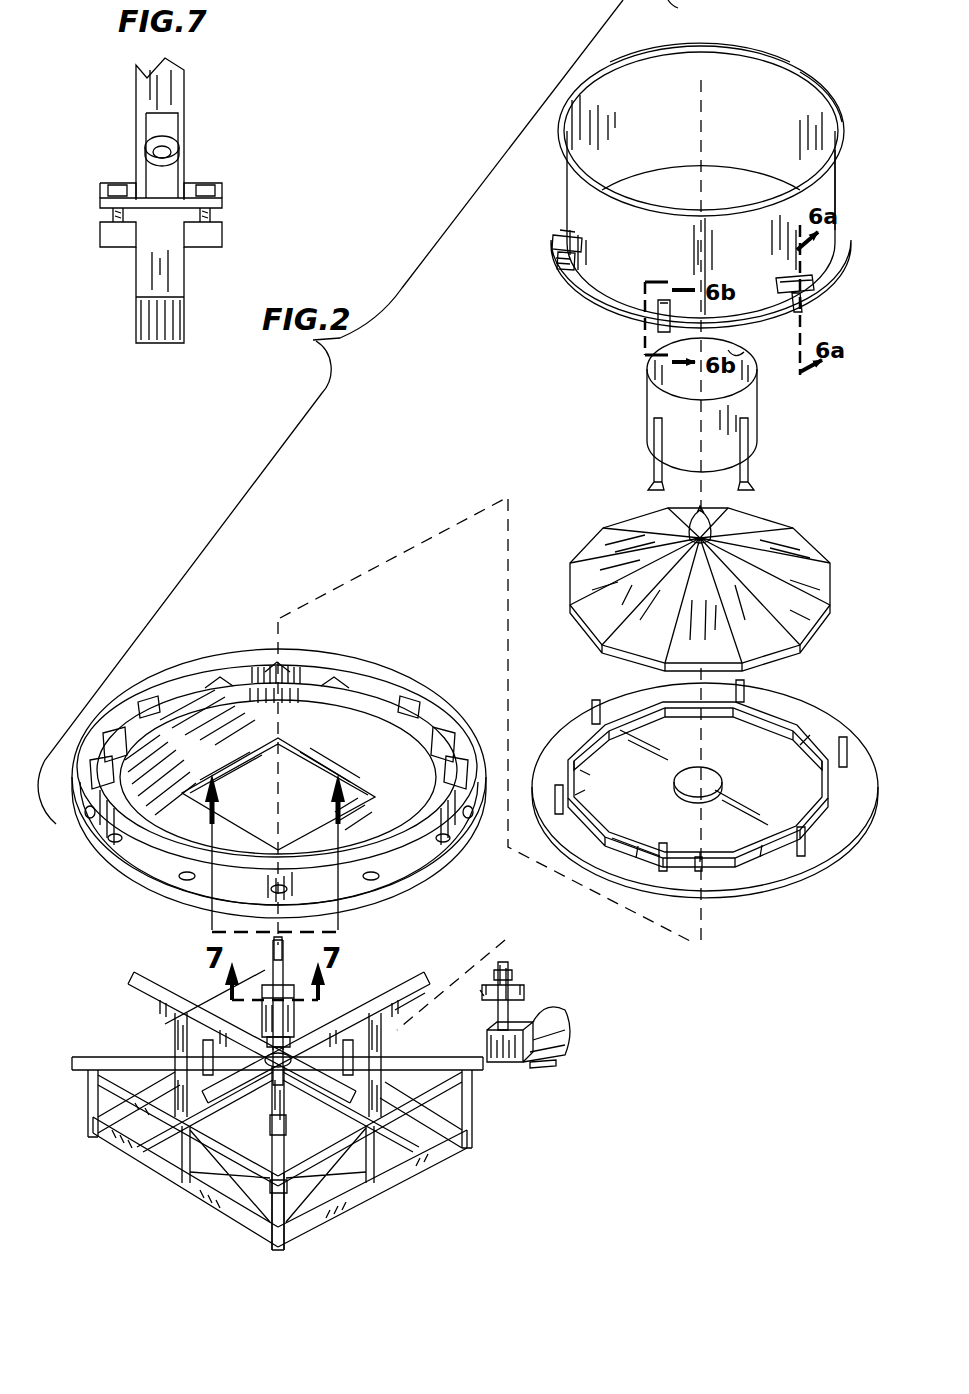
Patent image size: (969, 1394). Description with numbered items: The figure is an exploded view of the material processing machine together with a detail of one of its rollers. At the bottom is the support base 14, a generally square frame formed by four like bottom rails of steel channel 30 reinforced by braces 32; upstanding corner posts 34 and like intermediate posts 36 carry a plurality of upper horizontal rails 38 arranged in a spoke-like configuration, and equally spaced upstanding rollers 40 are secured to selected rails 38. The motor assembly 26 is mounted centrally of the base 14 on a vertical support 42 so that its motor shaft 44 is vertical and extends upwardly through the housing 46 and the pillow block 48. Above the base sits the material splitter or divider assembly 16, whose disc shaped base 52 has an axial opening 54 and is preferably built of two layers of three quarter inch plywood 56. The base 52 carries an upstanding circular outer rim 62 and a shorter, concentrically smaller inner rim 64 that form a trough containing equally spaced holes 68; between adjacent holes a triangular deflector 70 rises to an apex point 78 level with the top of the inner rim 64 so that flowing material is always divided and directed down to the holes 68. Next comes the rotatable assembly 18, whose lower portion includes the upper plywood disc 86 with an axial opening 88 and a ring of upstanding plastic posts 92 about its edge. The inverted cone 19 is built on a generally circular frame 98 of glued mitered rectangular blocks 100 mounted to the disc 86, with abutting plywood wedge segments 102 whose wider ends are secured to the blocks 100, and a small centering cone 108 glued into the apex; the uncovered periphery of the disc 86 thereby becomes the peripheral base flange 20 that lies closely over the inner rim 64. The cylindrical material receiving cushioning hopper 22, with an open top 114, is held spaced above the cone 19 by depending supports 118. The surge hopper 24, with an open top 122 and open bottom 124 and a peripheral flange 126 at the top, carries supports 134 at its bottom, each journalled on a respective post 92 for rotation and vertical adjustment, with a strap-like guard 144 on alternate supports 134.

In FIG. 2, the support base 14 is at (282, 1104).
In FIG. 2, the material splitter or divider assembly 16 is at (265, 751).
In FIG. 2, the rotatable assembly 18 is at (701, 588).
In FIG. 2, the inverted cone 19 is at (800, 536).
In FIG. 2, the peripheral base flange 20 is at (706, 810).
In FIG. 2, the material receiving cushioning hopper 22 is at (768, 402).
In FIG. 2, the surge hopper 24 is at (548, 218).
In FIG. 2, the motor assembly 26 is at (570, 1004).
In FIG. 2, the bottom rails of steel channel 30 is at (140, 1078).
In FIG. 2, the braces 32 is at (300, 1140).
In FIG. 2, the corner posts 34 is at (86, 1105).
In FIG. 2, the intermediate posts 36 is at (382, 1030).
In FIG. 7, the upper horizontal rails 38 is at (140, 268).
In FIG. 2, the upper horizontal rails 38 is at (138, 982).
In FIG. 7, the upstanding rollers 40 is at (178, 170).
In FIG. 2, the upstanding rollers 40 is at (264, 985).
In FIG. 2, the vertical support 42 is at (296, 1010).
In FIG. 2, the motor shaft 44 is at (515, 1005).
In FIG. 2, the housing 46 is at (270, 1075).
In FIG. 2, the pillow block 48 is at (512, 980).
In FIG. 2, the disc shaped base 52 is at (100, 872).
In FIG. 2, the axial opening 54 is at (278, 782).
In FIG. 2, the plywood layer 56 is at (300, 758).
In FIG. 2, the outer rim 62 is at (277, 765).
In FIG. 2, the inner rim 64 is at (398, 735).
In FIG. 2, the holes 68 is at (165, 882).
In FIG. 2, the triangular deflector 70 is at (142, 700).
In FIG. 2, the apex point 78 is at (208, 682).
In FIG. 2, the upper plywood disc 86 is at (830, 700).
In FIG. 2, the axial opening 88 is at (672, 782).
In FIG. 2, the upstanding plastic posts 92 is at (746, 690).
In FIG. 2, the frame 98 is at (765, 855).
In FIG. 2, the rectangular blocks 100 is at (635, 718).
In FIG. 2, the plywood wedge segments 102 is at (598, 548).
In FIG. 2, the centering cone 108 is at (712, 512).
In FIG. 2, the open top 114 is at (742, 352).
In FIG. 2, the depending supports 118 is at (652, 465).
In FIG. 2, the open top 122 is at (710, 36).
In FIG. 2, the open bottom 124 is at (789, 180).
In FIG. 2, the peripheral flange 126 is at (835, 83).
In FIG. 2, the supports 134 is at (578, 246).
In FIG. 2, the strap-like guard 144 is at (555, 258).